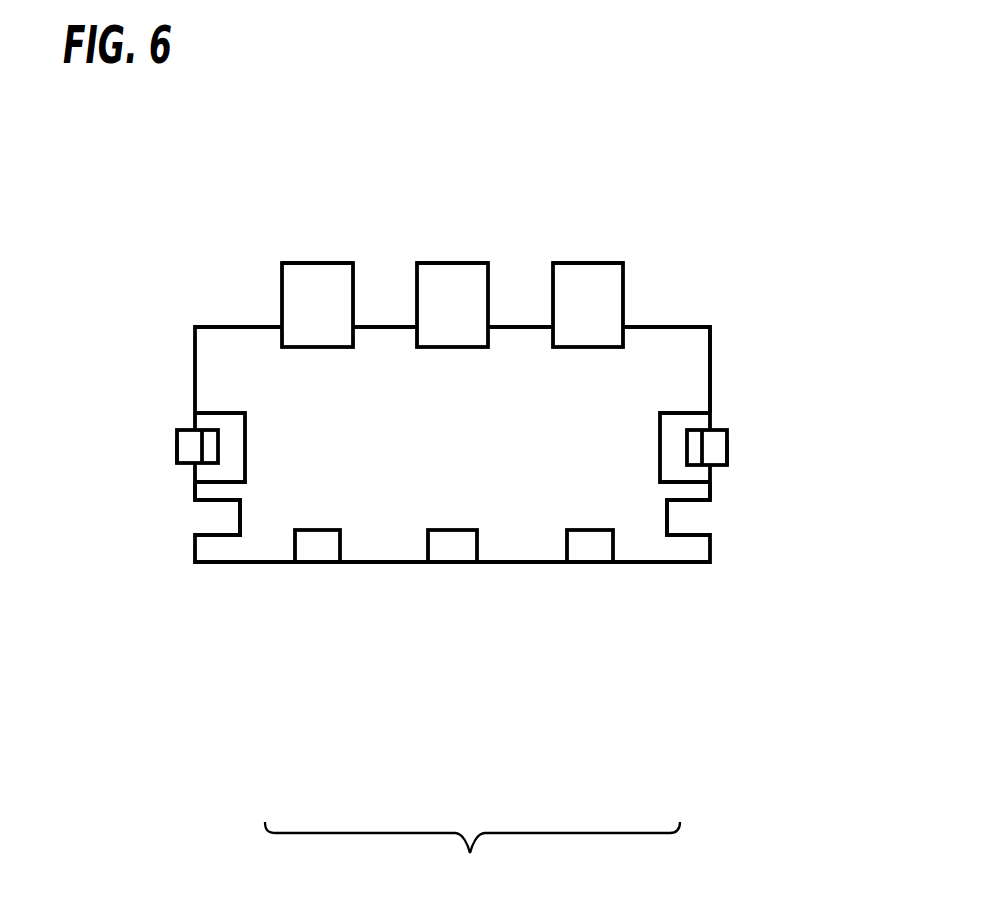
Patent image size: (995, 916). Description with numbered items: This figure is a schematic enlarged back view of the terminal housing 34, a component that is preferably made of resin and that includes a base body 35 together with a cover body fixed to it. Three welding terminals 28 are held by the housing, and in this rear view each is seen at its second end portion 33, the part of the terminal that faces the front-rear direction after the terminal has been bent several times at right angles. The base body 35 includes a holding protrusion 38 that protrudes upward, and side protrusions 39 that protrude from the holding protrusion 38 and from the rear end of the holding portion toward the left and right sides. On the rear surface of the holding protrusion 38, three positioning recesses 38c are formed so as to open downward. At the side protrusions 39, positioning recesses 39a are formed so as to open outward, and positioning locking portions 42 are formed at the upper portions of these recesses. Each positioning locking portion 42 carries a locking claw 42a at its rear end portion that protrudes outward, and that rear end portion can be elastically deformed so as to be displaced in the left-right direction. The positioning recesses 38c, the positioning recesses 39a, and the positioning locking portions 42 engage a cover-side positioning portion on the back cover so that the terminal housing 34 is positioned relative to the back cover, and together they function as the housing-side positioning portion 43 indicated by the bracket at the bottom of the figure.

The welding terminal 28 is at (300, 263).
The second end portion 33 is at (337, 273).
The terminal housing 34 is at (700, 354).
The base body 35 is at (700, 387).
The holding protrusion 38 is at (527, 343).
The positioning recess 38c is at (340, 547).
The side protrusion 39 is at (200, 489).
The positioning recess 39a is at (212, 530).
The positioning locking portion 42 is at (176, 442).
The locking claw 42a is at (178, 432).
The housing-side positioning portion 43 is at (472, 854).